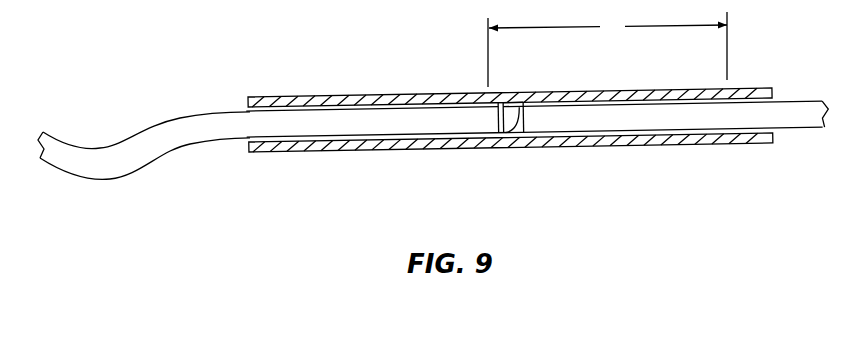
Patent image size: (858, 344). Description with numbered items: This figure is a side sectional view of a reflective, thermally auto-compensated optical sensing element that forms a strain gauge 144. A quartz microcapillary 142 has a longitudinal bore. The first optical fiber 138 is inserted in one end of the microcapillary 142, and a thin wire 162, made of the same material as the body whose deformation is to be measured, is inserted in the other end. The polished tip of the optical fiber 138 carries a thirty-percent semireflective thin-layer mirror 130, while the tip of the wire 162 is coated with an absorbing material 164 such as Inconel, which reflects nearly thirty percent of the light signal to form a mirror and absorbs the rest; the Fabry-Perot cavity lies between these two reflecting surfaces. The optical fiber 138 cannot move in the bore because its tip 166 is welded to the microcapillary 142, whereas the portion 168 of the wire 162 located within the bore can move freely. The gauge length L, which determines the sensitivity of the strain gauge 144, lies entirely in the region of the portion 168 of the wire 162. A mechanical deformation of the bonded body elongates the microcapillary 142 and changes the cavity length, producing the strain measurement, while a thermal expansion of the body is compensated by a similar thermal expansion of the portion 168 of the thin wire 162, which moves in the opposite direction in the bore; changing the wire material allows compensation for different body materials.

The gauge length L is at (607, 49).
The mirror 130 is at (502, 142).
The first optical fiber 138 is at (180, 131).
The microcapillary 142 is at (415, 148).
The strain gauge 144 is at (482, 86).
The thin wire 162 is at (792, 117).
The absorbing material 164 is at (522, 142).
The tip of the optical fiber 166 is at (484, 130).
The portion of the wire 168 is at (688, 117).